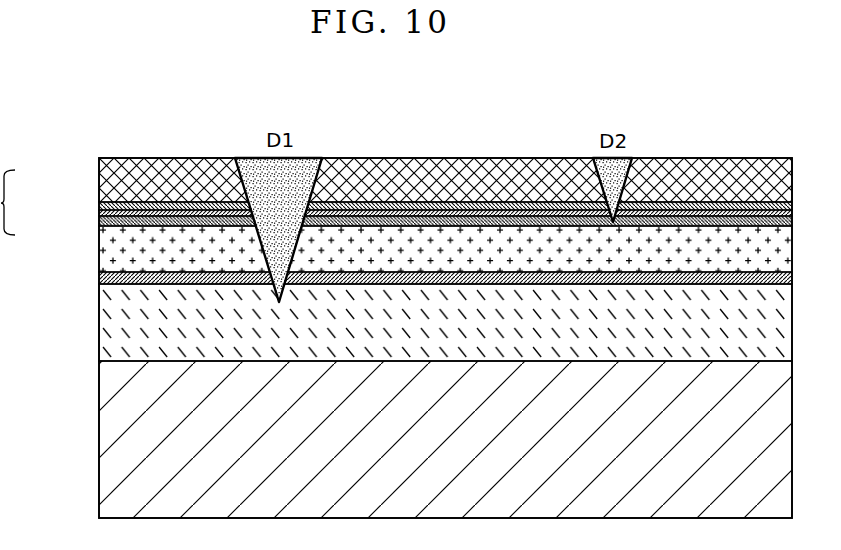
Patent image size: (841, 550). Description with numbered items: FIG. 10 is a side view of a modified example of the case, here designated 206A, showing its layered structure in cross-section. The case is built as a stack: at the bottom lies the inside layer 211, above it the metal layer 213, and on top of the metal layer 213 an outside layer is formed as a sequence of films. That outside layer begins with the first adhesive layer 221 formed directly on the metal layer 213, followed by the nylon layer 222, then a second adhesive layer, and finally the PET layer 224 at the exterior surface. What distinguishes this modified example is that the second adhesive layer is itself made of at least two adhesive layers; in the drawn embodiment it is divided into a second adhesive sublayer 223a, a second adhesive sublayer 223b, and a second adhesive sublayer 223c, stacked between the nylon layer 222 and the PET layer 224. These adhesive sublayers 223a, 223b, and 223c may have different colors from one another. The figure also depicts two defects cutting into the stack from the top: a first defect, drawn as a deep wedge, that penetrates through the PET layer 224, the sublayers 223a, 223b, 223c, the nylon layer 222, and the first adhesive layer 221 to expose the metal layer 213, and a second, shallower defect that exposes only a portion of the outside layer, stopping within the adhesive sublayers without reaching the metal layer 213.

The organic light-emitting display device 206A is at (667, 152).
The inside layer 211 is at (107, 453).
The metal layer 213 is at (105, 326).
The first adhesive layer 221 is at (100, 279).
The nylon layer 222 is at (103, 248).
The second adhesive sublayer 223a is at (98, 223).
The second adhesive sublayer 223b is at (98, 212).
The second adhesive sublayer 223c is at (98, 202).
The PET layer 224 is at (98, 167).